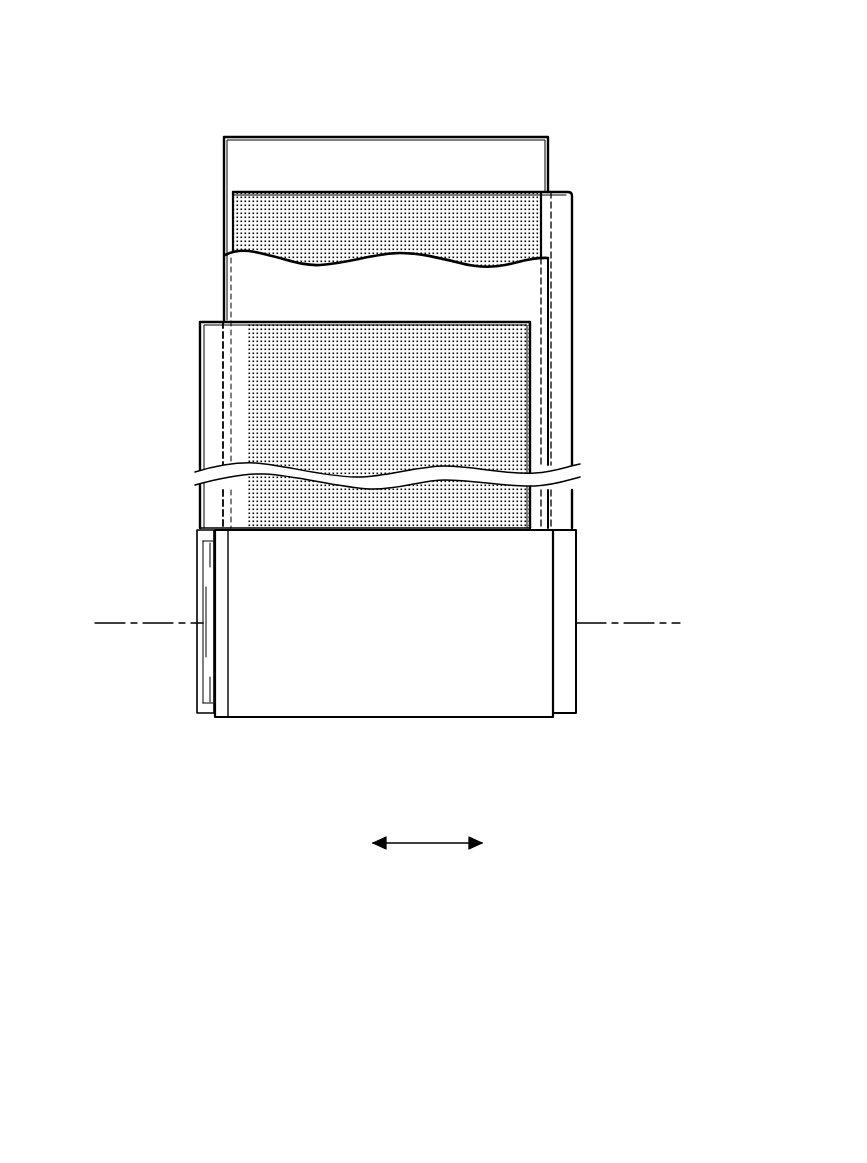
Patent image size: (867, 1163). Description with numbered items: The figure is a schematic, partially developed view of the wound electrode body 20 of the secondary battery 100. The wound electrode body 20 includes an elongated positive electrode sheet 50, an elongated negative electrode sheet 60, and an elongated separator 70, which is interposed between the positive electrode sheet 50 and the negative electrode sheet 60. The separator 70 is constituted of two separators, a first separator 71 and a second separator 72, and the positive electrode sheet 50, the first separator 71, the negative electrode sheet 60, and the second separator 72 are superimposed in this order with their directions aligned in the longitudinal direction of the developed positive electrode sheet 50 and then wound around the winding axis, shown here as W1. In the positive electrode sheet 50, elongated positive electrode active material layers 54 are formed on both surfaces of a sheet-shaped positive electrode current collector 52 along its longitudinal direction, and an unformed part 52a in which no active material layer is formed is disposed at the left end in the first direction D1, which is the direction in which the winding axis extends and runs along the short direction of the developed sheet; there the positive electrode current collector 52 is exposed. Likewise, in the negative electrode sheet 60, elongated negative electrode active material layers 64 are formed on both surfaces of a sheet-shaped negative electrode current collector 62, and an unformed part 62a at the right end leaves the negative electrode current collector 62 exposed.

The secondary battery 100 is at (573, 83).
The separator 70 is at (326, 332).
The second separator 72 is at (245, 163).
The first separator 71 is at (208, 393).
The negative electrode sheet 60 is at (458, 450).
The negative electrode current collector 62 is at (462, 452).
The unformed part 62a is at (560, 338).
The negative electrode active material layer 64 is at (540, 210).
The positive electrode sheet 50 is at (306, 517).
The positive electrode current collector 52 is at (306, 517).
The unformed part 52a is at (218, 582).
The positive electrode active material layer 54 is at (260, 342).
The wound electrode body 20 is at (447, 695).
The width axis W1 is at (367, 622).
The first direction D1 is at (427, 857).